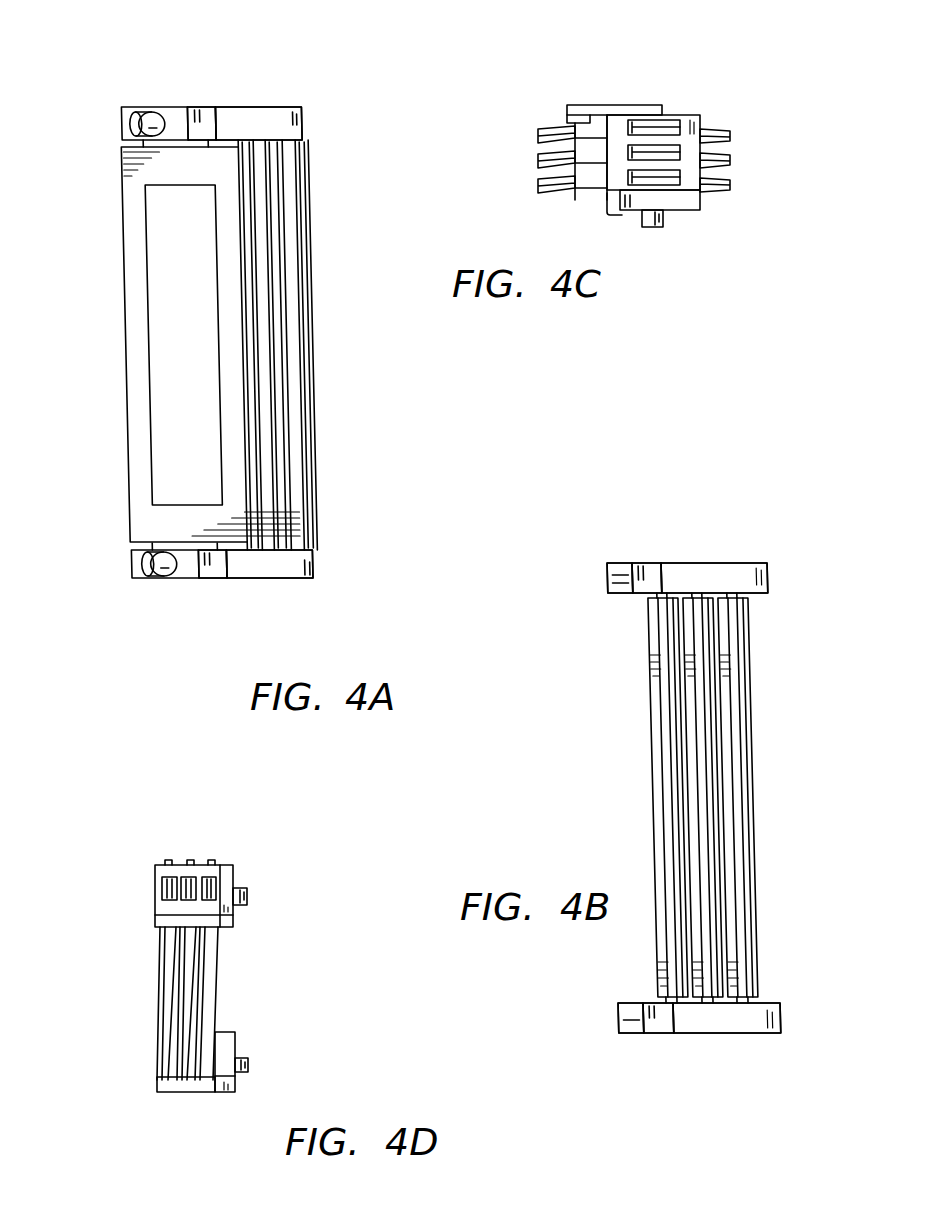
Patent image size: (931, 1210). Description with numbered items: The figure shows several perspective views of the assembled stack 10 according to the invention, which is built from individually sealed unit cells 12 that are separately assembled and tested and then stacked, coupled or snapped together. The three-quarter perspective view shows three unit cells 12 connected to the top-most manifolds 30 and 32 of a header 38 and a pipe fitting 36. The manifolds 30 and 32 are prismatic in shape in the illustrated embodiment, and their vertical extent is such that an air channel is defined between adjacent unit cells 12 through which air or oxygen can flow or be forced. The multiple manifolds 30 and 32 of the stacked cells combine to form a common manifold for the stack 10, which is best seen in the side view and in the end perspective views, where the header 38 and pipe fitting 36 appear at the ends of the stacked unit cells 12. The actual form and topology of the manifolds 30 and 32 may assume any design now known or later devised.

In FIG. 4A, the stack 10 is at (172, 343).
In FIG. 4B, the stack 10 is at (715, 798).
In FIG. 4D, the stack 10 is at (191, 1019).
In FIG. 4A, the unit cell 12 is at (112, 258).
In FIG. 4B, the unit cell 12 is at (730, 715).
In FIG. 4D, the unit cell 12 is at (218, 992).
In FIG. 4A, the manifold 30 is at (174, 573).
In FIG. 4C, the manifold 30 is at (692, 117).
In FIG. 4B, the manifold 30 is at (707, 1022).
In FIG. 4D, the manifold 30 is at (198, 1093).
In FIG. 4A, the manifold 32 is at (247, 115).
In FIG. 4C, the manifold 32 is at (577, 108).
In FIG. 4B, the manifold 32 is at (696, 572).
In FIG. 4D, the manifold 32 is at (163, 870).
In FIG. 4A, the pipe fitting 36 is at (144, 112).
In FIG. 4C, the pipe fitting 36 is at (658, 227).
In FIG. 4B, the pipe fitting 36 is at (609, 572).
In FIG. 4D, the pipe fitting 36 is at (247, 892).
In FIG. 4A, the header 38 is at (177, 112).
In FIG. 4C, the header 38 is at (690, 200).
In FIG. 4B, the header 38 is at (632, 573).